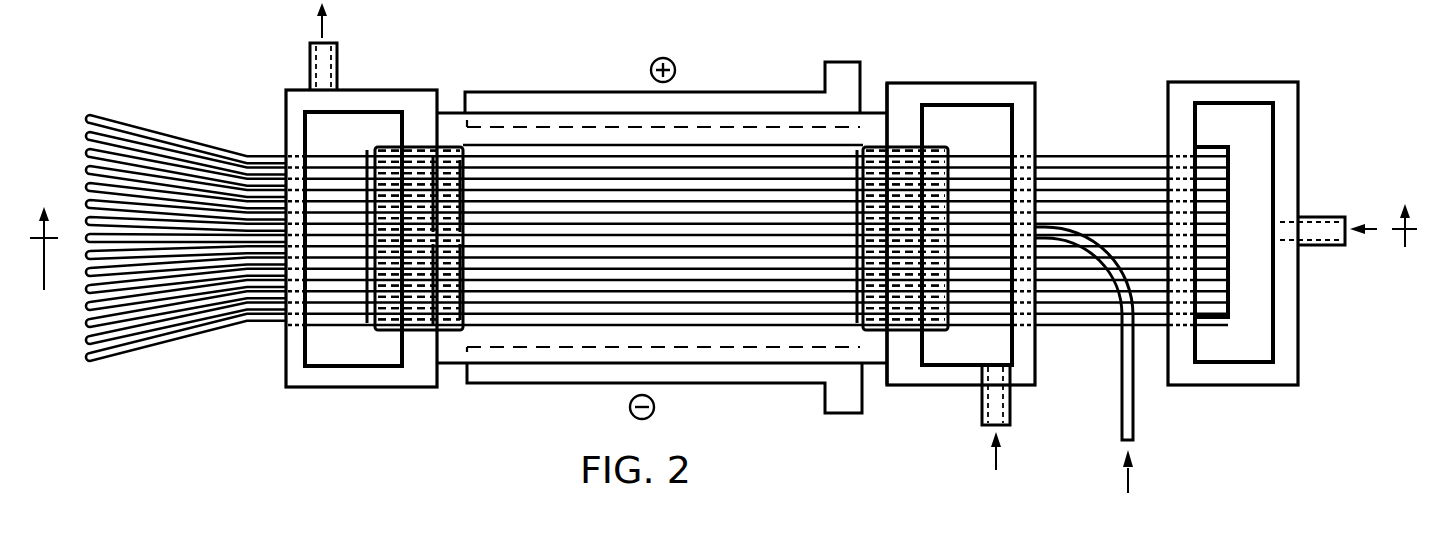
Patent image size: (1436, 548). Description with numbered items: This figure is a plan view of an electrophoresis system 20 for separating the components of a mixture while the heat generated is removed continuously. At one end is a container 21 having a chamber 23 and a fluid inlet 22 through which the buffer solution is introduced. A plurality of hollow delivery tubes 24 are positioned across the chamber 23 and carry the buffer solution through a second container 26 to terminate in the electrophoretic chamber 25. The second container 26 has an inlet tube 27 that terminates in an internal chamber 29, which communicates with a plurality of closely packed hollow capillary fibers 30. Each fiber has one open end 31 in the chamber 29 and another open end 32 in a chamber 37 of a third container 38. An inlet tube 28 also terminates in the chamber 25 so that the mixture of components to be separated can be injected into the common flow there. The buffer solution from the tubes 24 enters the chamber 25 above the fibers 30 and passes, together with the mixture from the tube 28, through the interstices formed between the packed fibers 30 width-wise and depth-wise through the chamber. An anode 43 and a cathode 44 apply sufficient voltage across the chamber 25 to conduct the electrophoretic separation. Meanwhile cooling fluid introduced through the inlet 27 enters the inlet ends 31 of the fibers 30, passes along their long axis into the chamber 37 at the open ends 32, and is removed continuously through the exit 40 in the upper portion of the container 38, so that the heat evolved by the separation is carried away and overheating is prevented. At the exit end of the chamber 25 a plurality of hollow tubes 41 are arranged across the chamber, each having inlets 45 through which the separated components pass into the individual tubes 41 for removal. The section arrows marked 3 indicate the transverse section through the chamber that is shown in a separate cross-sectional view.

The electrophoresis system 20 is at (604, 72).
The container 21 is at (1288, 99).
The fluid inlet 22 is at (1323, 216).
The chamber 23 is at (1228, 128).
The hollow delivery tubes 24 is at (1104, 147).
The electrophoretic chamber 25 is at (869, 105).
The second container 26 is at (1031, 101).
The inlet tube 27 is at (1012, 408).
The inlet tube 28 is at (1135, 408).
The internal chamber 29 is at (952, 352).
The hollow fibers 30 is at (941, 145).
The open end 31 is at (946, 149).
The open end 32 is at (370, 170).
The chamber 37 is at (352, 353).
The third container 38 is at (375, 90).
The exit 40 is at (338, 50).
The hollow tubes 41 is at (198, 142).
The anode 43 is at (743, 93).
The cathode 44 is at (567, 387).
The inlets 45 is at (463, 152).
The section line FIG. 3 is at (723, 247).